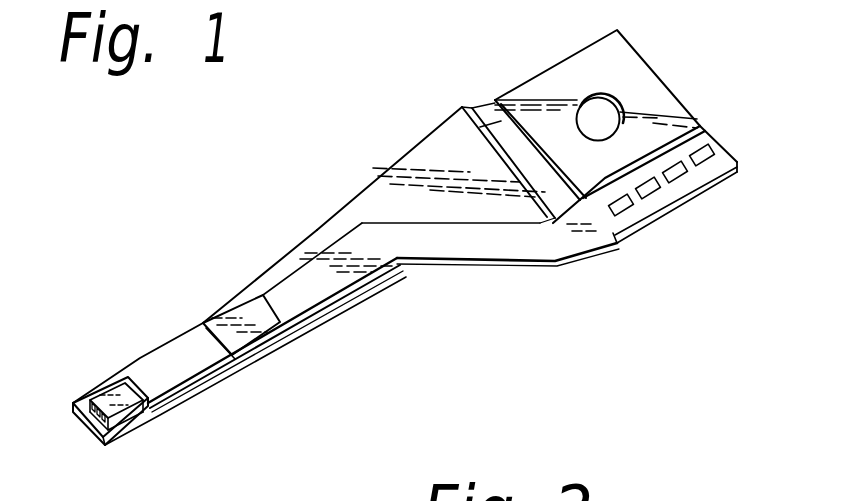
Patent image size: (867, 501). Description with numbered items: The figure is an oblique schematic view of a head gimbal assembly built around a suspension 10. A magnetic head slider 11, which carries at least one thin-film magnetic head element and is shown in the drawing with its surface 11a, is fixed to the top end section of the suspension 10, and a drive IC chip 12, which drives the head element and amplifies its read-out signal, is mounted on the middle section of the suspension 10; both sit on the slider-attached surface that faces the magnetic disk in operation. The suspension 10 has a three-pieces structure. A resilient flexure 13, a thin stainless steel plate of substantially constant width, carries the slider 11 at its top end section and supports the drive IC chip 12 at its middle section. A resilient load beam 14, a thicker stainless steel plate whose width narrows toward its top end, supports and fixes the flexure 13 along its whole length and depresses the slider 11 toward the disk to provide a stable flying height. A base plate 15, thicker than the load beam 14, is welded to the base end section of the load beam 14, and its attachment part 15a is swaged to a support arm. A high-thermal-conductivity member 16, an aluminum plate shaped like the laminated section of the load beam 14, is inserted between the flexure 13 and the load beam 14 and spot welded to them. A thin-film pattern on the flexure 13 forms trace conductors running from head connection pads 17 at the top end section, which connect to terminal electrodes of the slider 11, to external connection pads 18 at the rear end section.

The suspension 10 is at (401, 97).
The magnetic head slider 11 is at (128, 420).
The slider top surface 11a is at (117, 393).
The drive IC chip 12 is at (255, 352).
The flexure 13 is at (157, 367).
The load beam 14 is at (492, 100).
The base plate 15 is at (648, 82).
The attachment part 15a is at (580, 102).
The high-thermal-conductivity member 16 is at (397, 187).
The head connection pads 17 is at (103, 424).
The external connection pads 18 is at (700, 157).